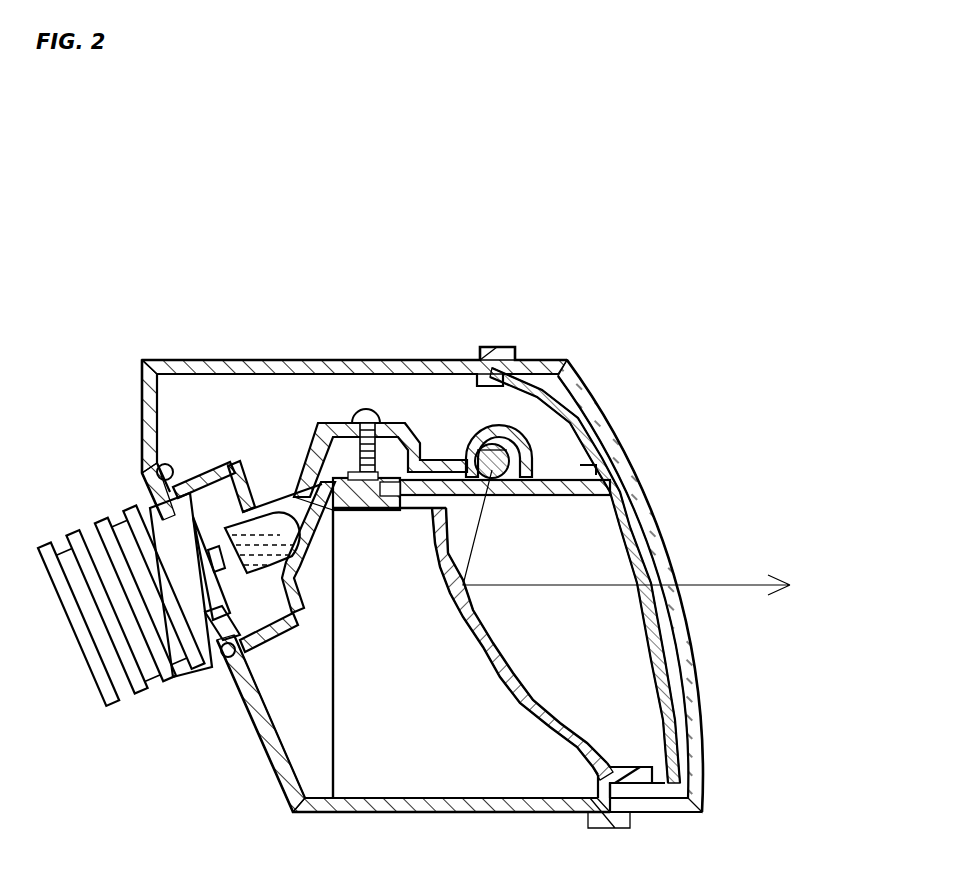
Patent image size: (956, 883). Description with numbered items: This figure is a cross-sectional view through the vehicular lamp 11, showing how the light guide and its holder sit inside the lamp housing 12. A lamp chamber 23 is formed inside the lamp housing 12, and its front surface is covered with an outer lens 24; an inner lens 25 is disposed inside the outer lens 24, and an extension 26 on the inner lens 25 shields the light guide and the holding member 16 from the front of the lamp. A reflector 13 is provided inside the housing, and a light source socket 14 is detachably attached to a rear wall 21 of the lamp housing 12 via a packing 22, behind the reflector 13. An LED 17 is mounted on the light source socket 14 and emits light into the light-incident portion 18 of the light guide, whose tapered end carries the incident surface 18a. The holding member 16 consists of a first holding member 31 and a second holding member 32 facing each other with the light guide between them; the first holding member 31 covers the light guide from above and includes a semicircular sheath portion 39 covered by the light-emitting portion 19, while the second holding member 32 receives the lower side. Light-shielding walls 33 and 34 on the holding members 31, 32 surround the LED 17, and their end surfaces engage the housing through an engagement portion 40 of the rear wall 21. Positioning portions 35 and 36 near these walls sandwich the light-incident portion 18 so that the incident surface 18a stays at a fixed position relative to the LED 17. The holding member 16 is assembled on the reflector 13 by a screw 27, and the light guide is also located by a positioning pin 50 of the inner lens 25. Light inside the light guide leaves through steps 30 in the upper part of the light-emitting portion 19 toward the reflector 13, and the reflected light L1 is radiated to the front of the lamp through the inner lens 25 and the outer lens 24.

The vehicular lamp 11 is at (488, 269).
The lamp housing 12 is at (265, 360).
The reflector 13 is at (505, 668).
The light source socket 14 is at (80, 650).
The holding member 16 is at (330, 392).
The LED 17 is at (210, 557).
The light-incident portion 18 is at (280, 517).
The incident surface 18a is at (205, 593).
The light-emitting portion 19 is at (502, 478).
The rear wall 21 is at (143, 440).
The packing 22 is at (228, 660).
The lamp chamber 23 is at (555, 626).
The outer lens 24 is at (640, 488).
The inner lens 25 is at (667, 660).
The extension 26 is at (600, 414).
The screw 27 is at (365, 408).
The steps 30 is at (477, 437).
The first holding member 31 is at (313, 436).
The second holding member 32 is at (320, 533).
The light-shielding wall 33 is at (200, 480).
The light-shielding wall 34 is at (277, 640).
The positioning portion 35 is at (238, 476).
The positioning portion 36 is at (290, 580).
The sheath portion 39 is at (510, 433).
The engagement portion 40 is at (143, 467).
The positioning pin 50 is at (590, 452).
The light L1 is at (740, 585).